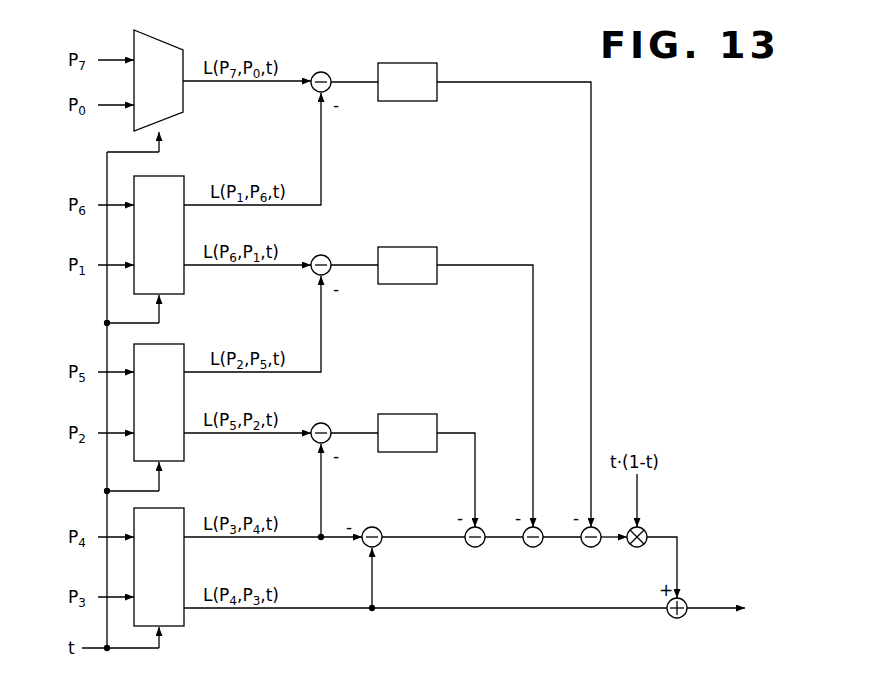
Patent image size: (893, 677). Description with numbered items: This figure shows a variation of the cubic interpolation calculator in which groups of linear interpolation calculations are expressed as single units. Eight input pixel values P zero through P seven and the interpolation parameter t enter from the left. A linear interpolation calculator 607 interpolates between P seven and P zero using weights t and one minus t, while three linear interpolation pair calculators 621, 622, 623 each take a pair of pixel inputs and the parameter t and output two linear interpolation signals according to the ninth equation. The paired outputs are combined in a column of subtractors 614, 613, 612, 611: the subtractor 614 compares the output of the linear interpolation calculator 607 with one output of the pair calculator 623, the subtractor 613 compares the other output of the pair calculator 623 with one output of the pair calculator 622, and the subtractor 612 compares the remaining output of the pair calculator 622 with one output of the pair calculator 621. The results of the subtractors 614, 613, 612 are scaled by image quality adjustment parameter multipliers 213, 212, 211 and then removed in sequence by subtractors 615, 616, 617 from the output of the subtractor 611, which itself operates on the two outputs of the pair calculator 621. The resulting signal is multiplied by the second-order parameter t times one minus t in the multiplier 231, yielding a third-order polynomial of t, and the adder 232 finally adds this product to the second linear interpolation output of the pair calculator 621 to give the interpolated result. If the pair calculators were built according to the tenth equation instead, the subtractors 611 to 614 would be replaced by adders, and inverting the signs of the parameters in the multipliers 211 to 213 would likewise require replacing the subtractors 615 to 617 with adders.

The linear interpolation calculator 607 is at (167, 42).
The linear interpolation pair calculator 623 is at (168, 176).
The linear interpolation pair calculator 622 is at (168, 344).
The linear interpolation pair calculator 621 is at (168, 508).
The subtractor 614 is at (328, 75).
The subtractor 613 is at (328, 258).
The subtractor 612 is at (328, 426).
The subtractor 611 is at (379, 530).
The image quality adjustment parameter multiplier 213 is at (420, 63).
The image quality adjustment parameter multiplier 212 is at (420, 247).
The image quality adjustment parameter multiplier 211 is at (420, 414).
The subtractor 615 is at (475, 547).
The subtractor 616 is at (533, 547).
The subtractor 617 is at (591, 547).
The multiplier 231 is at (645, 531).
The adder 232 is at (685, 601).